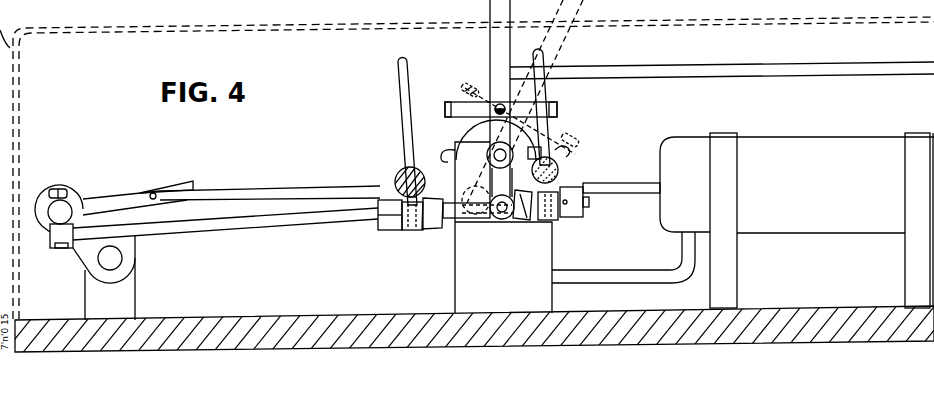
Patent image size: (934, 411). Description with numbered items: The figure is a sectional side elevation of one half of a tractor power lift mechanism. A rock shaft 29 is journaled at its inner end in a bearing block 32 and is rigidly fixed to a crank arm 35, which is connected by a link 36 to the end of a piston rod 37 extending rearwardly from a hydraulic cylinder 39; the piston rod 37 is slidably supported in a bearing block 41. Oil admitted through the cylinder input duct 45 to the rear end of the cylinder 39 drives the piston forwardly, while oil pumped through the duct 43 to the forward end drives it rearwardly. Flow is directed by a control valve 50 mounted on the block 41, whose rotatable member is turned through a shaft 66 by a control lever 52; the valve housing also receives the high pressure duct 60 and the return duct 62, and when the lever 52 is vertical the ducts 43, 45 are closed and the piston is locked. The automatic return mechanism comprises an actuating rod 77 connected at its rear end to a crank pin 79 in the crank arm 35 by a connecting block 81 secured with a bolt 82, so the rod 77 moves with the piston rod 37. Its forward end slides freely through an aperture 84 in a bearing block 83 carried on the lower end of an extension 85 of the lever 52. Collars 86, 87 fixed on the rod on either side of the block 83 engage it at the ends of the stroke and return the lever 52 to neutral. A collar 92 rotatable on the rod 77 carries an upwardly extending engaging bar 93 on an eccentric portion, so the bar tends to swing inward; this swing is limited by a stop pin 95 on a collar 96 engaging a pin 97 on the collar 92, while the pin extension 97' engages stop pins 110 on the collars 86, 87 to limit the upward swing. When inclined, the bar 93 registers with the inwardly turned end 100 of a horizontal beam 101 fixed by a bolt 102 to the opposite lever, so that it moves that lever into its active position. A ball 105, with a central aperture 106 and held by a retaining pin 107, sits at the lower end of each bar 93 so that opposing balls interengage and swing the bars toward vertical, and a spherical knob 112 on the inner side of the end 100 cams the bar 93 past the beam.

The rock shaft 29 is at (123, 259).
The bearing block 32 is at (86, 292).
The crank arm 35 is at (80, 198).
The link 36 is at (108, 196).
The piston rod 37 is at (250, 190).
The hydraulic cylinder 39 is at (833, 204).
The bearing block 41 is at (514, 284).
The duct 43 is at (660, 67).
The cylinder input duct 45 is at (632, 275).
The control valve 50 is at (468, 132).
The control lever 52 is at (488, 36).
The high pressure duct 60 is at (568, 150).
The return duct 62 is at (440, 155).
The shaft 66 is at (485, 155).
The actuating rod 77 is at (282, 223).
The crank pin 79 is at (39, 203).
The connecting block 81 is at (50, 242).
The bolt 82 is at (58, 188).
The bearing block 83 is at (495, 220).
The aperture 84 is at (490, 210).
The extension 85 is at (530, 153).
The collar 86 is at (455, 238).
The collar 87 is at (525, 222).
The collar 92 is at (412, 232).
The engaging bar 93 is at (398, 66).
The stop pin 95 is at (394, 220).
The collar 96 is at (378, 200).
The pin 97 is at (472, 206).
The pin extension 97' is at (503, 209).
The inwardly turned end 100 is at (446, 108).
The horizontal beam 101 is at (462, 98).
The bolt 102 is at (502, 103).
The ball 105 is at (404, 168).
The central aperture 106 is at (398, 178).
The retaining pin 107 is at (398, 143).
The stop pin 110 is at (428, 230).
The knob 112 is at (473, 85).